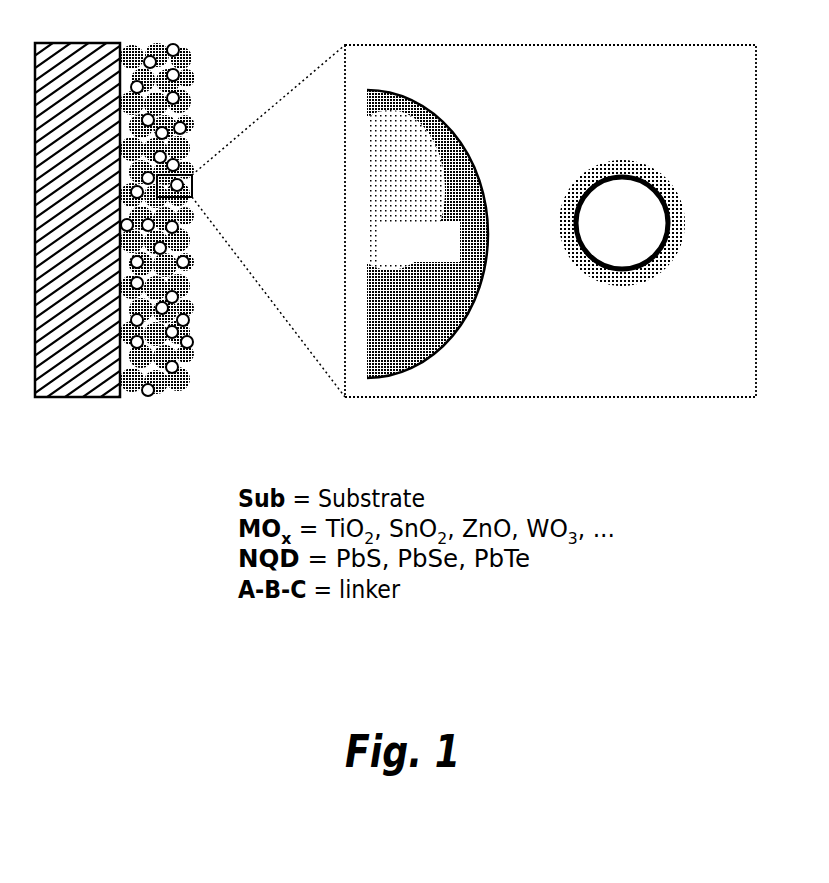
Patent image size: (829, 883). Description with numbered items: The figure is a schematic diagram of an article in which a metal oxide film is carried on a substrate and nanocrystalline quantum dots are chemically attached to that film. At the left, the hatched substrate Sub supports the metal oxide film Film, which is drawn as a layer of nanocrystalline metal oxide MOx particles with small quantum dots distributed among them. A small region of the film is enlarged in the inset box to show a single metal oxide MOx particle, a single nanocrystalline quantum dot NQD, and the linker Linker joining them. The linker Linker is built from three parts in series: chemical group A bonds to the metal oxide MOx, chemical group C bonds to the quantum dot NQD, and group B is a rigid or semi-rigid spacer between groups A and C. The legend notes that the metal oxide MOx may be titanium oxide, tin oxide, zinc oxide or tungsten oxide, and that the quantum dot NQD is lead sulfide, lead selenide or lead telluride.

The substrate Sub is at (77, 228).
The metal oxide film Film is at (157, 203).
The metal oxide MOx is at (164, 389).
The nanocrystalline quantum dot NQD is at (197, 358).
The linker Linker is at (534, 200).